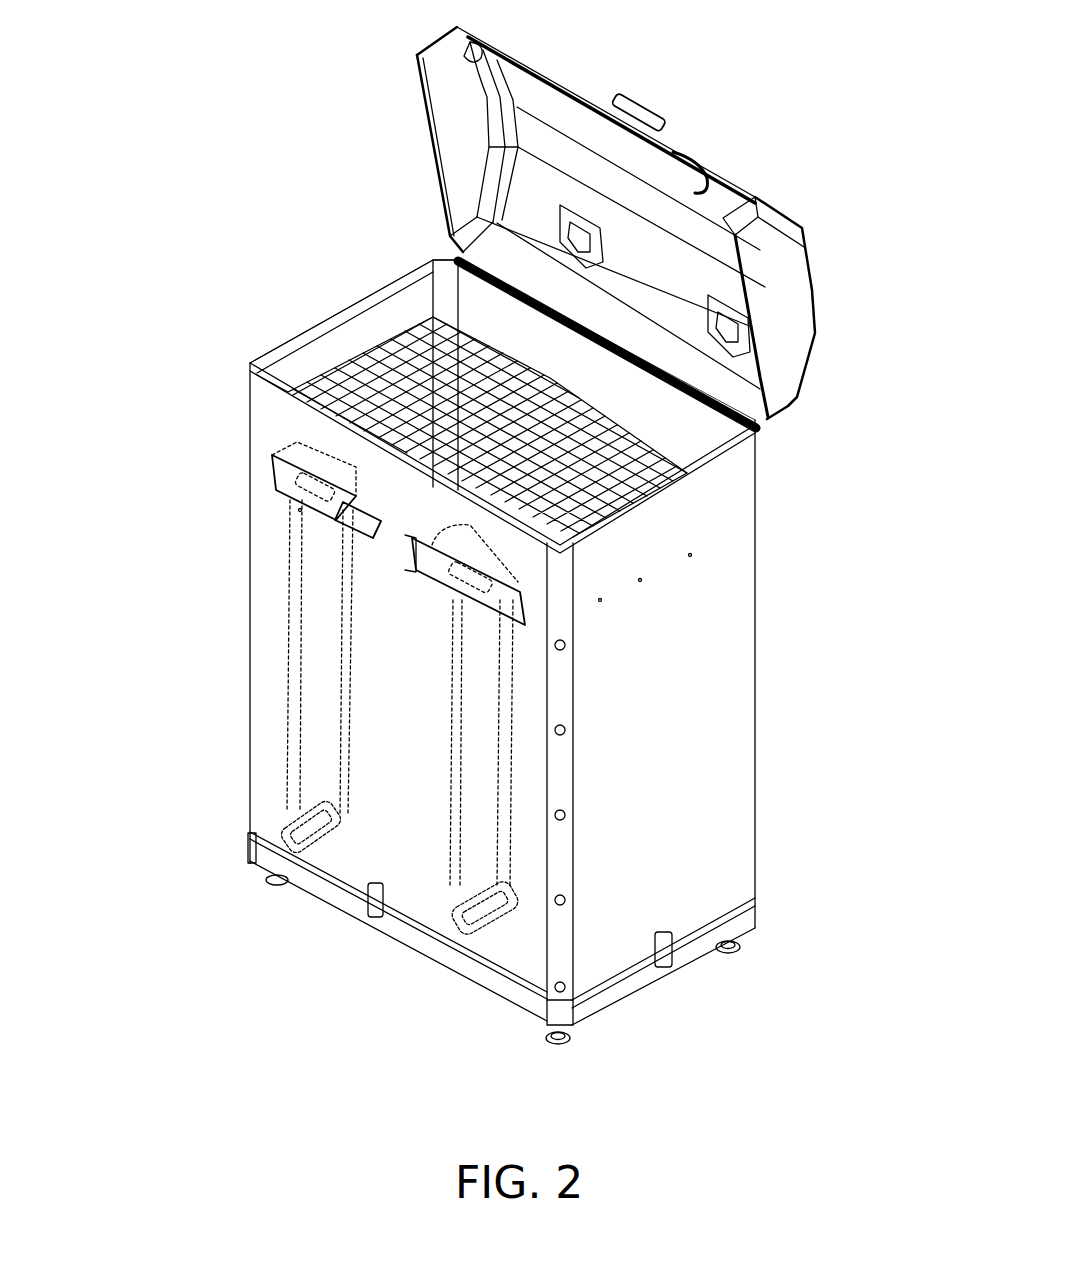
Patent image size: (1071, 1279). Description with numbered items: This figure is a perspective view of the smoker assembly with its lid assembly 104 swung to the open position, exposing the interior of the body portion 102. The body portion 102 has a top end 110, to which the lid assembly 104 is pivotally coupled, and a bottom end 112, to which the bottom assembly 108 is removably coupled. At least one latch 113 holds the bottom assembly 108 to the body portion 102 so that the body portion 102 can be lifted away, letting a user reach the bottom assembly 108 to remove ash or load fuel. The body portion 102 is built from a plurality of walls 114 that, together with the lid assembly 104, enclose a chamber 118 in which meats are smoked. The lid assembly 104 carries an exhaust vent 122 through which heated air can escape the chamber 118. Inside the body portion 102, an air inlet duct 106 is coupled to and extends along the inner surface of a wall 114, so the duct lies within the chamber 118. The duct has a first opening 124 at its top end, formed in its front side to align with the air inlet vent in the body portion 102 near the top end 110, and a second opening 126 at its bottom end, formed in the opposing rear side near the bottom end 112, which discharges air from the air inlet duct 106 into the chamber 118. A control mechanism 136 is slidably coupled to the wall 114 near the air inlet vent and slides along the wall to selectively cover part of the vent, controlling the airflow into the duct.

The body portion 102 is at (775, 688).
The lid assembly 104 is at (790, 193).
The air inlet duct 106 is at (302, 622).
The bottom assembly 108 is at (740, 960).
The top end 110 is at (242, 415).
The bottom end 112 is at (236, 812).
The latch 113 is at (372, 918).
The wall 114 is at (418, 699).
The chamber 118 is at (705, 440).
The exhaust vent 122 is at (560, 228).
The first opening 124 is at (292, 497).
The second opening 126 is at (296, 878).
The control mechanism 136 is at (345, 525).